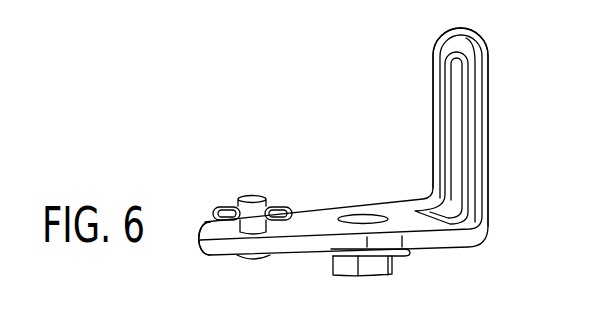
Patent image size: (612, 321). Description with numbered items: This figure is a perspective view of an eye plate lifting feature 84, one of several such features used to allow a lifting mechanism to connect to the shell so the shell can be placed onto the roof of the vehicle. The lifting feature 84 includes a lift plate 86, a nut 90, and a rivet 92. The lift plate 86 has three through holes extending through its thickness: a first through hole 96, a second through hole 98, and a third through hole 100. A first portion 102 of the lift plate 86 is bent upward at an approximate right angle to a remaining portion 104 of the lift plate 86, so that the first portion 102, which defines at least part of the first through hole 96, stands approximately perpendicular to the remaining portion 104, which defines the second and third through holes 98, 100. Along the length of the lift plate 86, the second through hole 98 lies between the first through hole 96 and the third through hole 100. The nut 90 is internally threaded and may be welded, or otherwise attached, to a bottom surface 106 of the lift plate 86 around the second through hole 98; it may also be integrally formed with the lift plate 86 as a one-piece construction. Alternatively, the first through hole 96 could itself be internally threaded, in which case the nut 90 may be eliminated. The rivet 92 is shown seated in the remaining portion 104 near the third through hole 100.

The eye plate lifting feature 84 is at (257, 138).
The lift plate 86 is at (343, 207).
The nut 90 is at (376, 268).
The rivet 92 is at (249, 195).
The first through hole 96 is at (458, 110).
The second through hole 98 is at (375, 216).
The third through hole 100 is at (280, 229).
The first portion of the lift plate 102 is at (503, 81).
The remaining portion of the lift plate 104 is at (305, 267).
The bottom surface of the lift plate 106 is at (211, 259).